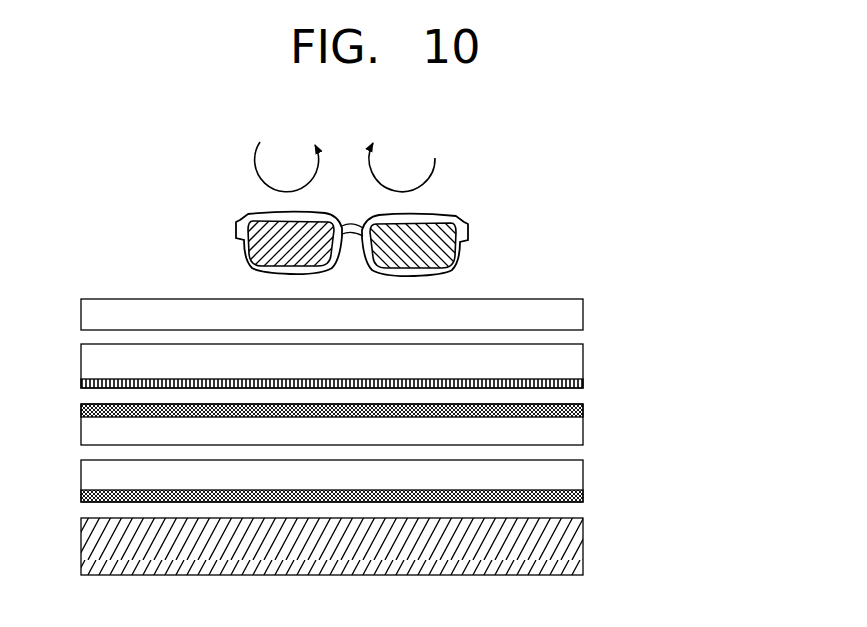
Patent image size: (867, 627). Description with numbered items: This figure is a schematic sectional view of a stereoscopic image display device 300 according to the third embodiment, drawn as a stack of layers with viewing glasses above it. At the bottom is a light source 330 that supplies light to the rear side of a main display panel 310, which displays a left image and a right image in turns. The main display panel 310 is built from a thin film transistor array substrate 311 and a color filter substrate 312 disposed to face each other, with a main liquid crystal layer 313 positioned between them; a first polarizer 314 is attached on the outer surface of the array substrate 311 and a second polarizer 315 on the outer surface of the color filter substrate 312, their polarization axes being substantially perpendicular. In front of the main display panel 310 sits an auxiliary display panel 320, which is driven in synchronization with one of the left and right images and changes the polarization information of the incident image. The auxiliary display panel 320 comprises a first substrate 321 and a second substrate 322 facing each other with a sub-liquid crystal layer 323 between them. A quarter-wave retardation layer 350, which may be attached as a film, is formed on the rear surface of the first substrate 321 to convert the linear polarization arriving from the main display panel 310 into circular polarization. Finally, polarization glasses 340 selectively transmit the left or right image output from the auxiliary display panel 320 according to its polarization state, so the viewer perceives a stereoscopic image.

The stereoscopic image display device 300 is at (594, 277).
The main display panel 310 is at (658, 408).
The thin film transistor array substrate 311 is at (576, 479).
The color filter substrate 312 is at (576, 437).
The main liquid crystal layer 313 is at (577, 457).
The first polarizer 314 is at (583, 499).
The second polarizer 315 is at (583, 414).
The auxiliary display panel 320 is at (658, 305).
The first substrate 321 is at (576, 363).
The second substrate 322 is at (576, 317).
The sub-liquid crystal layer 323 is at (577, 341).
The light source 330 is at (576, 550).
The polarization glasses 340 is at (473, 212).
The λ/4 retardation layer 350 is at (583, 385).